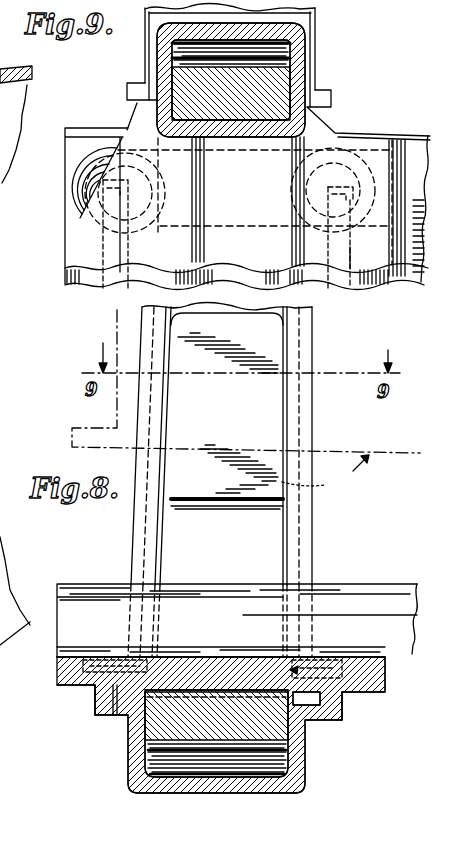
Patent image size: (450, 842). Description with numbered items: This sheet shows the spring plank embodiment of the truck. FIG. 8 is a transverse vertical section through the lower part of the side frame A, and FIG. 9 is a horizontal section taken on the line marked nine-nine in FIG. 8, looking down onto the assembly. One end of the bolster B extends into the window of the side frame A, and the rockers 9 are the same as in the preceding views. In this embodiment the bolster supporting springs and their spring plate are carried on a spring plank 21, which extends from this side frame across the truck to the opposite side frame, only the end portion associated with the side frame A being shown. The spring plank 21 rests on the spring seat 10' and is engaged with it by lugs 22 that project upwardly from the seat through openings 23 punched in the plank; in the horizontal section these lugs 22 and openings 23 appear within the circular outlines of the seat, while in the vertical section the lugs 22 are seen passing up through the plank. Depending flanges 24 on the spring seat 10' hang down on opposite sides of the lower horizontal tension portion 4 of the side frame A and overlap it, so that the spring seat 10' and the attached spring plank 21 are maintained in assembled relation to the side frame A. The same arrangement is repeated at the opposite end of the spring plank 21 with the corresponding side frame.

In FIG. 8, the lower horizontal tension portion 4 is at (128, 768).
In FIG. 9, the rockers 9 is at (260, 88).
In FIG. 9, the spring seat 10' is at (246, 221).
In FIG. 8, the spring seat 10' is at (198, 725).
In FIG. 9, the spring plank 21 is at (80, 161).
In FIG. 8, the spring plank 21 is at (218, 656).
In FIG. 9, the lugs 22 is at (101, 206).
In FIG. 8, the lugs 22 is at (140, 667).
In FIG. 9, the openings 23 is at (298, 202).
In FIG. 8, the openings 23 is at (81, 668).
In FIG. 9, the depending flanges 24 is at (103, 250).
In FIG. 8, the depending flanges 24 is at (97, 717).
In FIG. 9, the car truck side frame A is at (315, 33).
In FIG. 8, the car truck side frame A is at (137, 538).
In FIG. 9, the bolster B is at (241, 242).
In FIG. 8, the bolster B is at (246, 403).